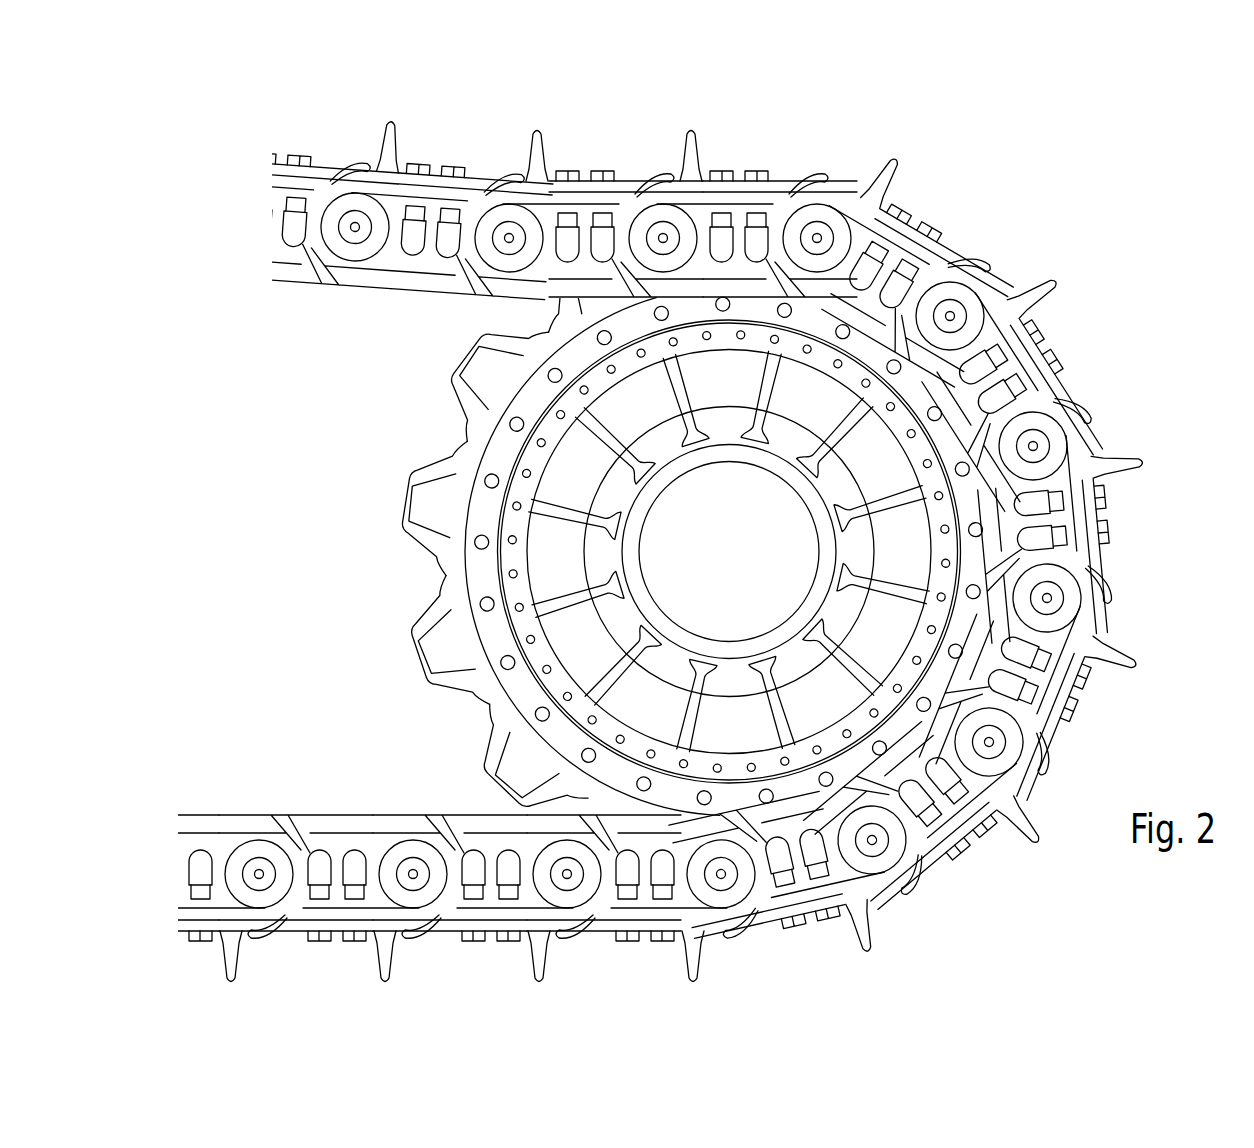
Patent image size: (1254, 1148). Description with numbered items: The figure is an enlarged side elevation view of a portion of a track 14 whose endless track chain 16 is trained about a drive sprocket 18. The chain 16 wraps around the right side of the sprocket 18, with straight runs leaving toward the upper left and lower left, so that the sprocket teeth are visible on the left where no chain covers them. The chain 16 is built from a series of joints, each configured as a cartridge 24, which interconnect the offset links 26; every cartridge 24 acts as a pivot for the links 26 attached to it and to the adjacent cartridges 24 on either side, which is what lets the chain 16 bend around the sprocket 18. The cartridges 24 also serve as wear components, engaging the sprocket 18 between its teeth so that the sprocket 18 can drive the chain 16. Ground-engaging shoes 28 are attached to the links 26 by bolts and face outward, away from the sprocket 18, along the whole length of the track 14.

The track 14 is at (1092, 282).
The endless track chain 16 is at (424, 323).
The drive sprocket 18 is at (550, 561).
The cartridge 24 is at (830, 217).
The offset link 26 is at (893, 232).
The ground-engaging shoe 28 is at (925, 253).